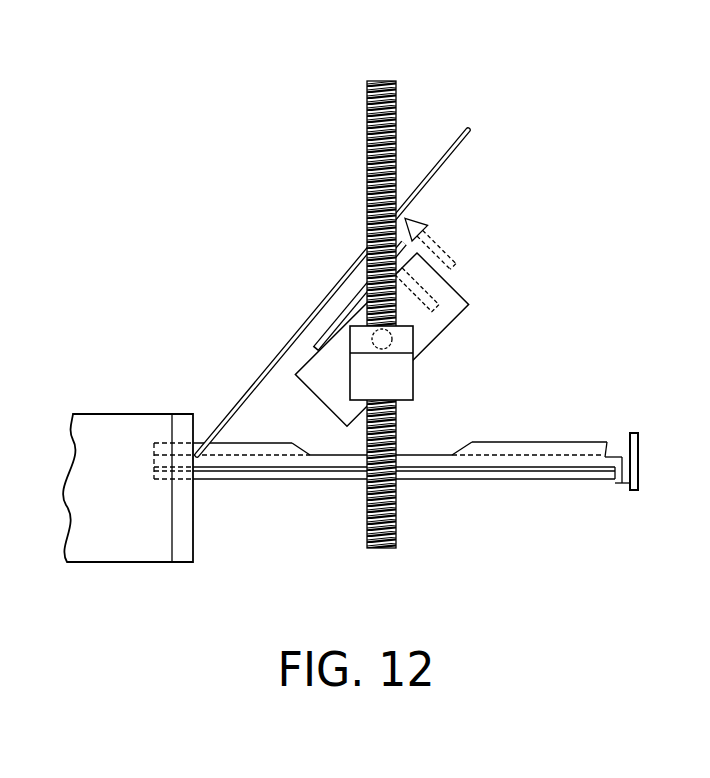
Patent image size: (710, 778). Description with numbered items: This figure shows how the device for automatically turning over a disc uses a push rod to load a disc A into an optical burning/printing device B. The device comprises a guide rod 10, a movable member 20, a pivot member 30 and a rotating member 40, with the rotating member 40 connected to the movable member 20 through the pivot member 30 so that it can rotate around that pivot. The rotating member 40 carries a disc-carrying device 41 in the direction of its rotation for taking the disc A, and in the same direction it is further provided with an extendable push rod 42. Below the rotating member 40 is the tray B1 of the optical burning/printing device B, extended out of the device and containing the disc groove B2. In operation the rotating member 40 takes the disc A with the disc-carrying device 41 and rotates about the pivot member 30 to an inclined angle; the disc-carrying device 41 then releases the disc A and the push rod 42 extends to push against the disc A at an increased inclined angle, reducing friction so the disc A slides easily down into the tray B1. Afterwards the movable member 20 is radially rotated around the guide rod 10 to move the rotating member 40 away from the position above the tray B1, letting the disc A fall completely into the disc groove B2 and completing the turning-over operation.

The guide rod 10 is at (365, 131).
The movable member 20 is at (416, 378).
The pivot member 30 is at (371, 331).
The rotating member 40 is at (470, 291).
The disc-carrying device 41 is at (321, 335).
The push rod 42 is at (412, 243).
The disc A is at (249, 386).
The optical burning/printing device B is at (120, 413).
The tray B1 is at (297, 478).
The disc groove B2 is at (437, 455).